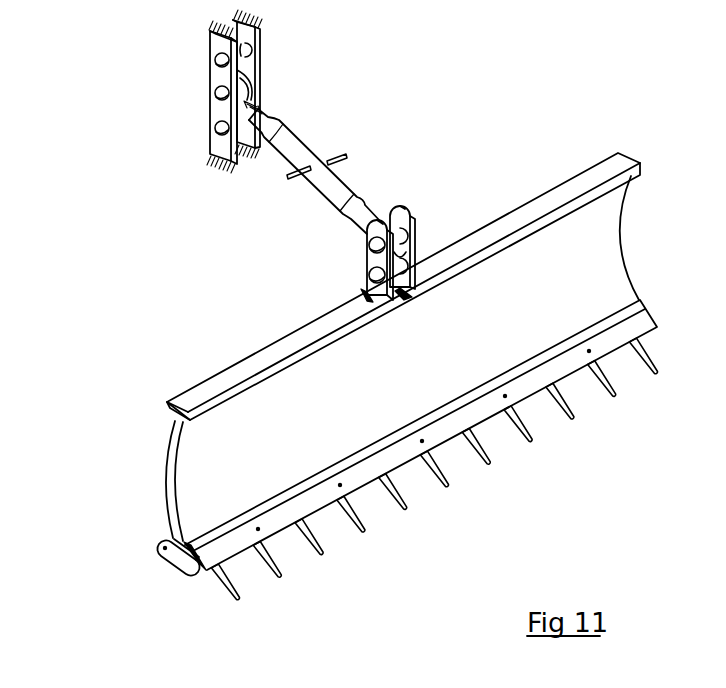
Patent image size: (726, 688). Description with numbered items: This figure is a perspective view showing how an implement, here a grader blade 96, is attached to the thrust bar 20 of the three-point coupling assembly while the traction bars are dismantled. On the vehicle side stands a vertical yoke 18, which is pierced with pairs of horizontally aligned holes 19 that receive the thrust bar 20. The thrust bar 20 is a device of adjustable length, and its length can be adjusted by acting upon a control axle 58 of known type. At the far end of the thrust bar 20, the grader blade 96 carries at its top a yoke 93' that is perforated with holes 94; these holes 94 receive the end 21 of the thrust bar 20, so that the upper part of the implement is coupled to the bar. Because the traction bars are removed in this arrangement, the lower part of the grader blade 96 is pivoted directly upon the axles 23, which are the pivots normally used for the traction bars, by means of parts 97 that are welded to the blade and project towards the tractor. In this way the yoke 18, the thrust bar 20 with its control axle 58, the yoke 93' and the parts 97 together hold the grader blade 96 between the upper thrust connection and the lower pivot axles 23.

The vertical yoke 18 is at (264, 67).
The holes 19 is at (214, 126).
The thrust bar 20 is at (302, 134).
The control axle 58 is at (348, 157).
The yoke 93' is at (423, 243).
The holes 94 is at (368, 274).
The end of the thrust bar 21 is at (400, 254).
The grader blade 96 is at (609, 248).
The parts 97 is at (182, 562).
The pivot axles 23 is at (162, 548).